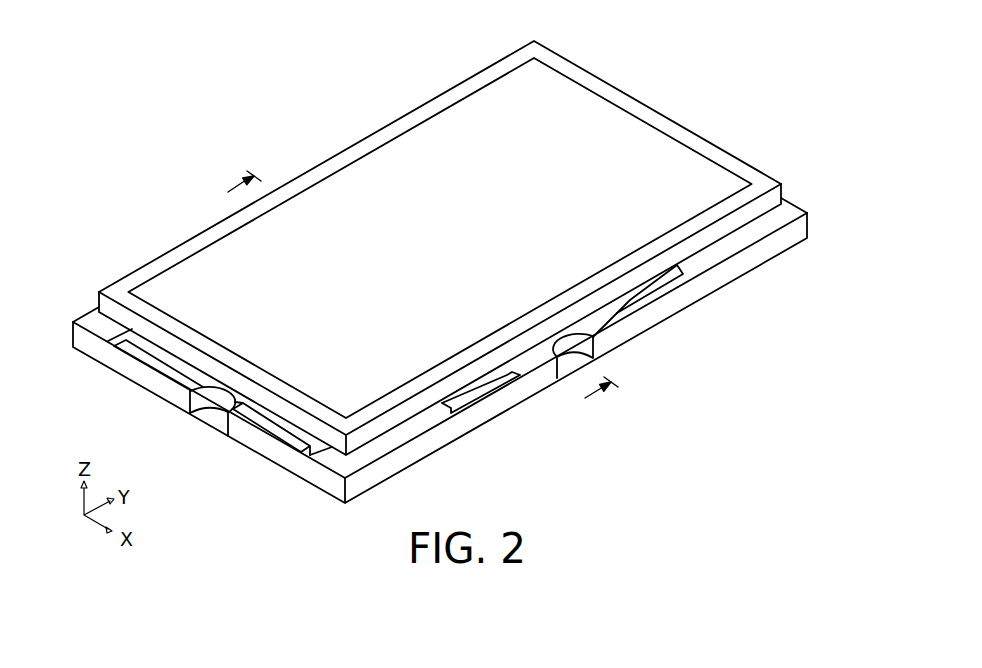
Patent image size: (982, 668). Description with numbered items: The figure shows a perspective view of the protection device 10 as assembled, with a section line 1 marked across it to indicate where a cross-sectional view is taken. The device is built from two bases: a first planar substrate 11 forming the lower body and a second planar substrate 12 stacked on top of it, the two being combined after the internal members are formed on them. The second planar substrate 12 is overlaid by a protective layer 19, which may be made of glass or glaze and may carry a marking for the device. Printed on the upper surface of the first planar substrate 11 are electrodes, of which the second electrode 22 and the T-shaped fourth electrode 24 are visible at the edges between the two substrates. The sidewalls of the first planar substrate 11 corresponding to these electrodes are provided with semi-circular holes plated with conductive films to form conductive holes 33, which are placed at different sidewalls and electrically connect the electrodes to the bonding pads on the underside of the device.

The line 1- 1 is at (416, 295).
The protection device 10 is at (469, 258).
The first planar substrate 11 is at (469, 350).
The second planar substrate 12 is at (440, 246).
The protective layer 19 is at (533, 87).
The second electrode 22 is at (650, 287).
The fourth electrode 24 is at (277, 420).
The conductive holes 33 is at (200, 402).